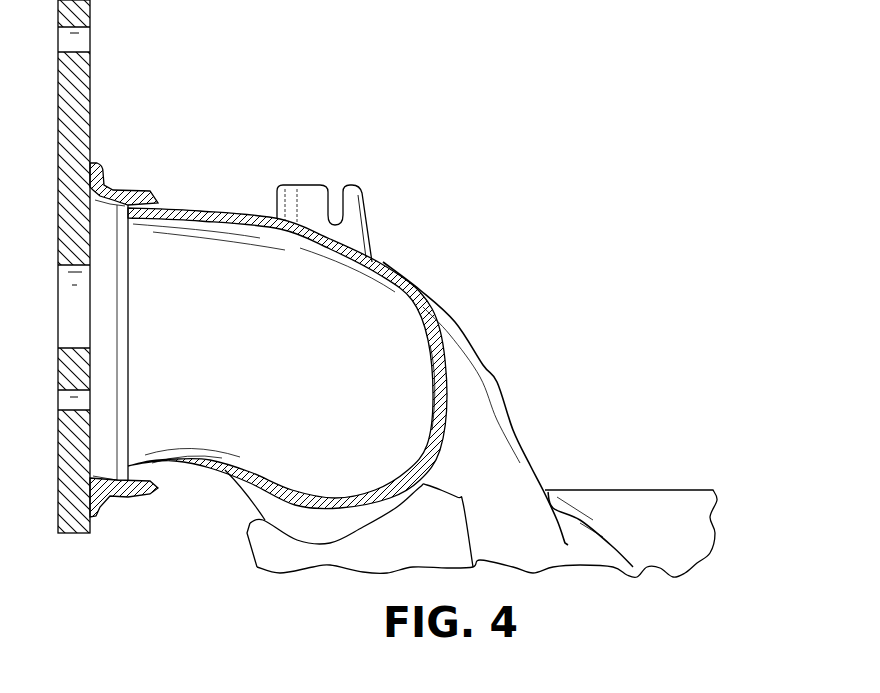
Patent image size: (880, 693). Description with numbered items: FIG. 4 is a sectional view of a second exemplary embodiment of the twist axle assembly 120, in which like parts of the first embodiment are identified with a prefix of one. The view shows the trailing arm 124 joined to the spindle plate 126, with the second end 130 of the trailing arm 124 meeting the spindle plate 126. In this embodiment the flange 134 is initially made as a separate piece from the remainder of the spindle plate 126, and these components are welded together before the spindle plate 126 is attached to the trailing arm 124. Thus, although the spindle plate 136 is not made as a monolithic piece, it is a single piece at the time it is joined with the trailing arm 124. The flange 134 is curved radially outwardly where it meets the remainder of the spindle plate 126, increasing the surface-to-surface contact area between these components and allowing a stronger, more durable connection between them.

The twist axle assembly 120 is at (417, 357).
The trailing arm 124 is at (497, 381).
The spindle plate 126 is at (95, 80).
The second end 130 is at (178, 220).
The flange 134 is at (128, 493).
The spindle plate 136 is at (93, 158).